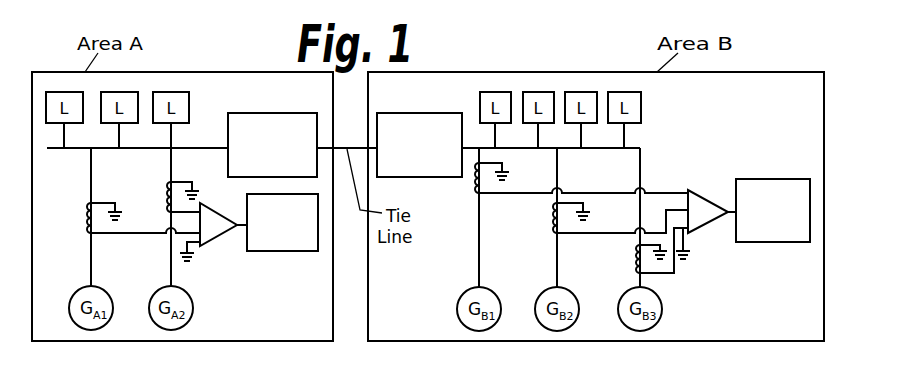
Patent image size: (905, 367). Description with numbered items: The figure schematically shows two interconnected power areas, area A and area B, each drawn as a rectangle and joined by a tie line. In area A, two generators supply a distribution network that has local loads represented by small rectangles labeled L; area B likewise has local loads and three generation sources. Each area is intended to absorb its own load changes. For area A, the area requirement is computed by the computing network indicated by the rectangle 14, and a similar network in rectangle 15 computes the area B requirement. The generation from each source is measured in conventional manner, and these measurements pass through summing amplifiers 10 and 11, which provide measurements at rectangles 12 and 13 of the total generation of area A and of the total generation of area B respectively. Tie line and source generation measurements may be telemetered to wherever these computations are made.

The summing amplifier 10 is at (208, 230).
The summing amplifier 11 is at (701, 203).
The total generation indication rectangle 12 is at (285, 252).
The total generation indication rectangle 13 is at (785, 183).
The area requirement computing network 14 is at (243, 118).
The area requirement computing network 15 is at (418, 117).